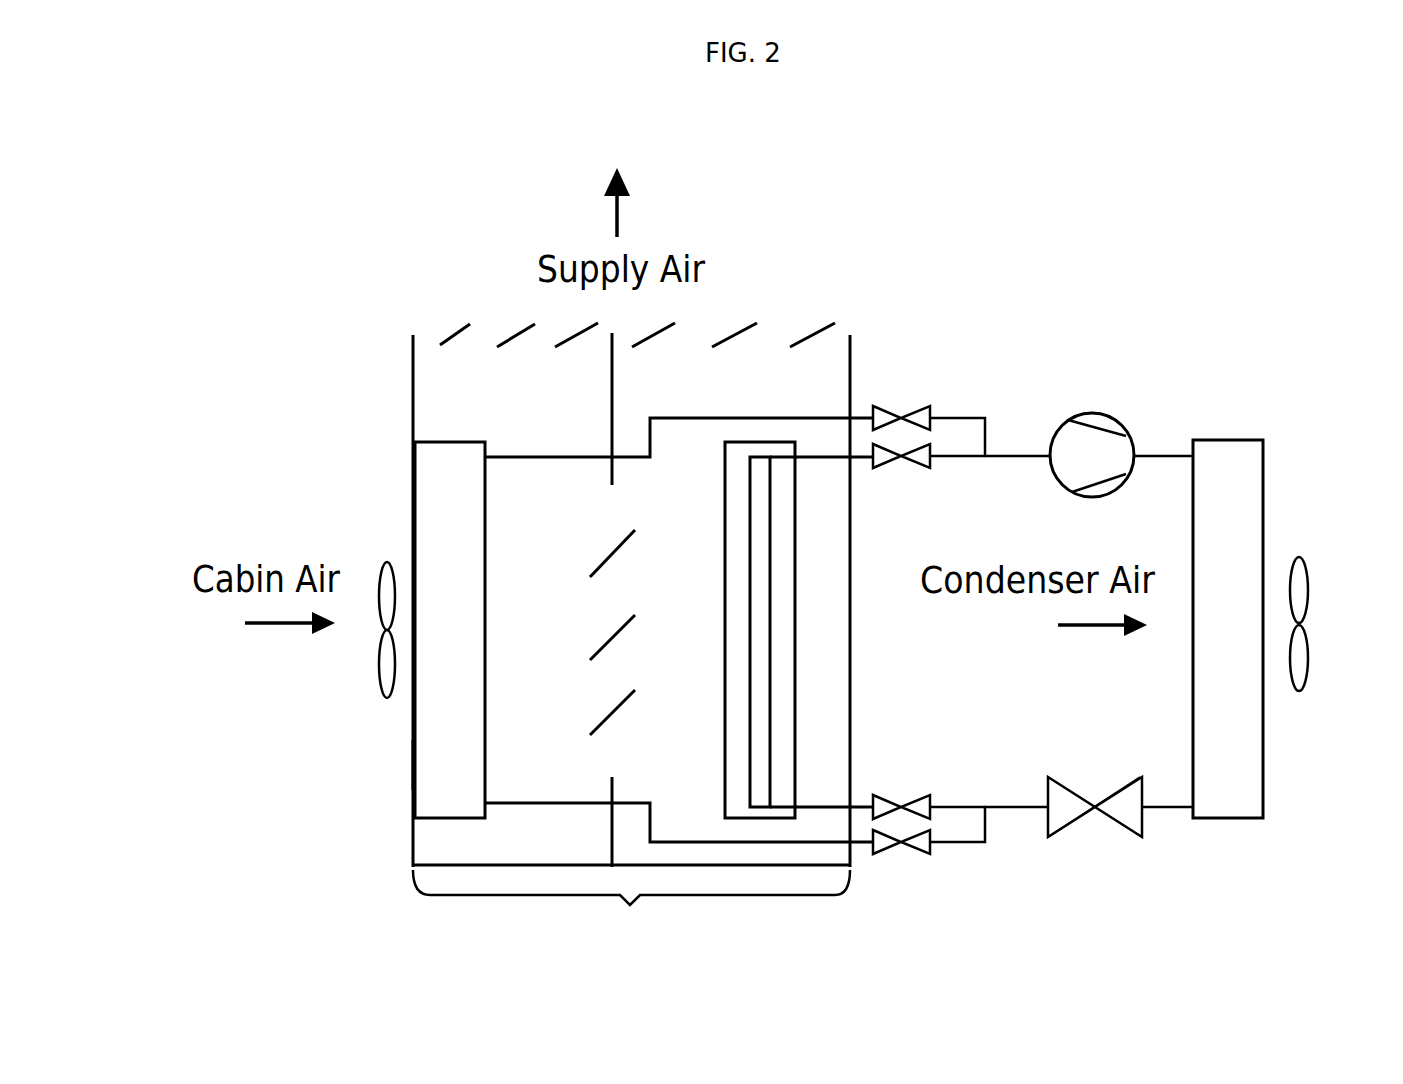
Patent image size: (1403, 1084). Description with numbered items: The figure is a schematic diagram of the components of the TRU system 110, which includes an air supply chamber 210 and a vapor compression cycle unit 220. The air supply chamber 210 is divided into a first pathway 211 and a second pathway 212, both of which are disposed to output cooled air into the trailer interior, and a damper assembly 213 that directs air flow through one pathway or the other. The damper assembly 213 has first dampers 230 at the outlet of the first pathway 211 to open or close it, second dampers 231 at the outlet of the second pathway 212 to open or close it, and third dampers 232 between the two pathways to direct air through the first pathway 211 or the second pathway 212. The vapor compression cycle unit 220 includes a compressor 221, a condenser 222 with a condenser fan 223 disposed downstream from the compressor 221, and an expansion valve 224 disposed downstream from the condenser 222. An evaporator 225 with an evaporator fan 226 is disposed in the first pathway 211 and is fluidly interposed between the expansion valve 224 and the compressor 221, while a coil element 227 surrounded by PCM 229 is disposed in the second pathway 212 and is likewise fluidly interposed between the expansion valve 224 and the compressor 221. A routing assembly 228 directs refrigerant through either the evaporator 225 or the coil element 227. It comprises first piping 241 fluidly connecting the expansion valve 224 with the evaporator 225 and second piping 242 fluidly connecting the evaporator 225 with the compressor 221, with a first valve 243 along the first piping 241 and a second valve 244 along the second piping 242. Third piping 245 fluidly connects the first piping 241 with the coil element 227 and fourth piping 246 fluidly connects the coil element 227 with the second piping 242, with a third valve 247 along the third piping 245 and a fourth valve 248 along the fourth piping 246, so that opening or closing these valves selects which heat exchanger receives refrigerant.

The TRU system 110 is at (335, 378).
The air supply chamber 210 is at (630, 905).
The first pathway 211 is at (509, 760).
The second pathway 212 is at (693, 808).
The damper assembly 213 is at (605, 362).
The vapor compression cycle unit 220 is at (915, 632).
The compressor 221 is at (1098, 418).
The condenser 222 is at (1222, 445).
The condenser fan 223 is at (1300, 560).
The expansion valve 224 is at (1125, 818).
The evaporator 225 is at (416, 765).
The evaporator fan 226 is at (392, 670).
The coil element 227 is at (757, 506).
The routing assembly 228 is at (955, 855).
The PCM 229 is at (737, 637).
The first dampers 230 is at (529, 330).
The second dampers 231 is at (745, 330).
The third dampers 232 is at (602, 562).
The first piping 241 is at (1003, 810).
The second piping 242 is at (1010, 455).
The first valve 243 is at (885, 848).
The second valve 244 is at (890, 412).
The third piping 245 is at (957, 808).
The fourth piping 246 is at (965, 460).
The third valve 247 is at (892, 803).
The fourth valve 248 is at (885, 460).